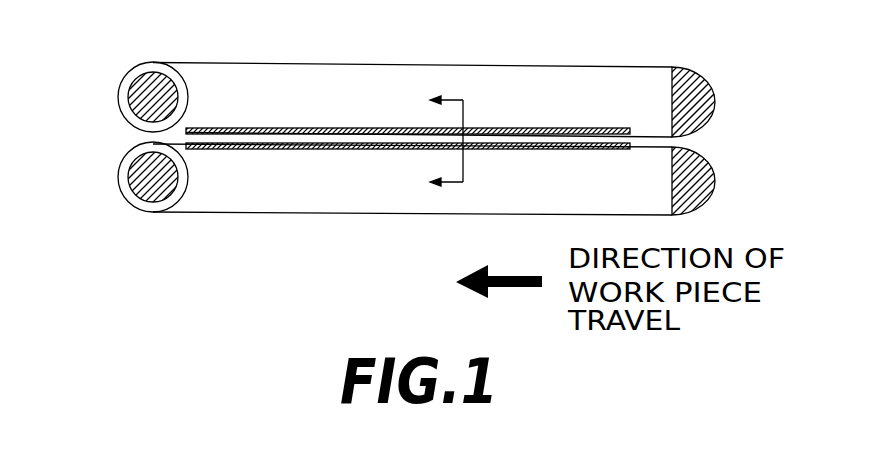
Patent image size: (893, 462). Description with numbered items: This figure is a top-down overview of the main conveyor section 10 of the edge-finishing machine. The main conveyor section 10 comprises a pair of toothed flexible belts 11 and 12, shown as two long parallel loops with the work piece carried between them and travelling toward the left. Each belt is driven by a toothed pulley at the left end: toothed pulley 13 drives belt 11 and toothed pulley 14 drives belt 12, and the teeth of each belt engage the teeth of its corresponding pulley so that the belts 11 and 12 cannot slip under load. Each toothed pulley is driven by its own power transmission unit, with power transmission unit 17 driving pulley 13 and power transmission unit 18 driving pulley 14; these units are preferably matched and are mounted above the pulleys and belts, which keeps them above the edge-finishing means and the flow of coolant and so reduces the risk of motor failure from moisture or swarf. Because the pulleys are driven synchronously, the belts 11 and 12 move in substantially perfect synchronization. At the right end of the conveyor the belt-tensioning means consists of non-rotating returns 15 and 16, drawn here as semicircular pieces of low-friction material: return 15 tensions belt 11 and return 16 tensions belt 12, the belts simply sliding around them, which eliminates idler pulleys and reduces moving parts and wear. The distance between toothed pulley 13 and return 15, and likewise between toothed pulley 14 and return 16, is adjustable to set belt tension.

The main conveyor section 10 is at (622, 23).
The toothed flexible belt 11 is at (278, 63).
The toothed flexible belt 12 is at (373, 215).
The toothed pulley 13 is at (118, 94).
The toothed pulley 14 is at (118, 182).
The non-rotating return 15 is at (717, 107).
The non-rotating return 16 is at (715, 189).
The power transmission unit 17 is at (135, 83).
The power transmission unit 18 is at (135, 197).